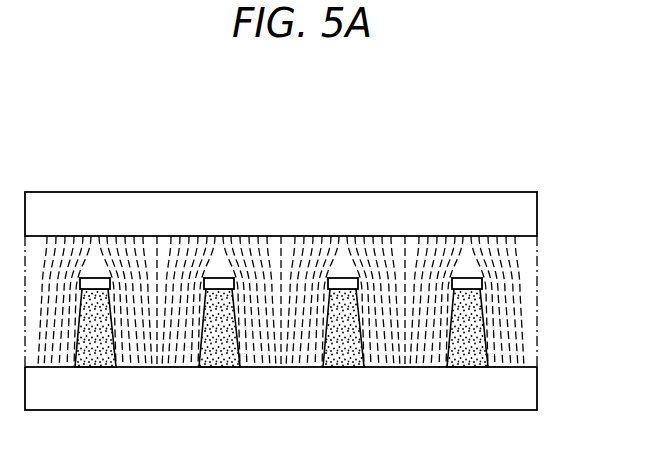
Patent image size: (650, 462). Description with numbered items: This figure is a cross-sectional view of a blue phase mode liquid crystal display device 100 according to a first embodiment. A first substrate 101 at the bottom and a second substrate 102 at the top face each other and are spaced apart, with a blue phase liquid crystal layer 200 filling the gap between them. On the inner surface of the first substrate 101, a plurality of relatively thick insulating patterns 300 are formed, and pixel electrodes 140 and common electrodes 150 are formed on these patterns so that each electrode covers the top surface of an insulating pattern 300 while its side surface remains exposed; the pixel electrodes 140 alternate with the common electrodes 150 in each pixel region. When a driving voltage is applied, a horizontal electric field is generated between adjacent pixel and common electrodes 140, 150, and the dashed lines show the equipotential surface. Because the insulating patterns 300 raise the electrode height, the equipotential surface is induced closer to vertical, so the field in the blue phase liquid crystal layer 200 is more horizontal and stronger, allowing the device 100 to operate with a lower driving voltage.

The blue phase mode liquid crystal display device 100 is at (515, 147).
The first substrate 101 is at (520, 393).
The second substrate 102 is at (520, 214).
The pixel electrode 140 is at (93, 278).
The common electrode 150 is at (218, 278).
The blue phase liquid crystal layer 200 is at (522, 284).
The insulating pattern 300 is at (470, 332).